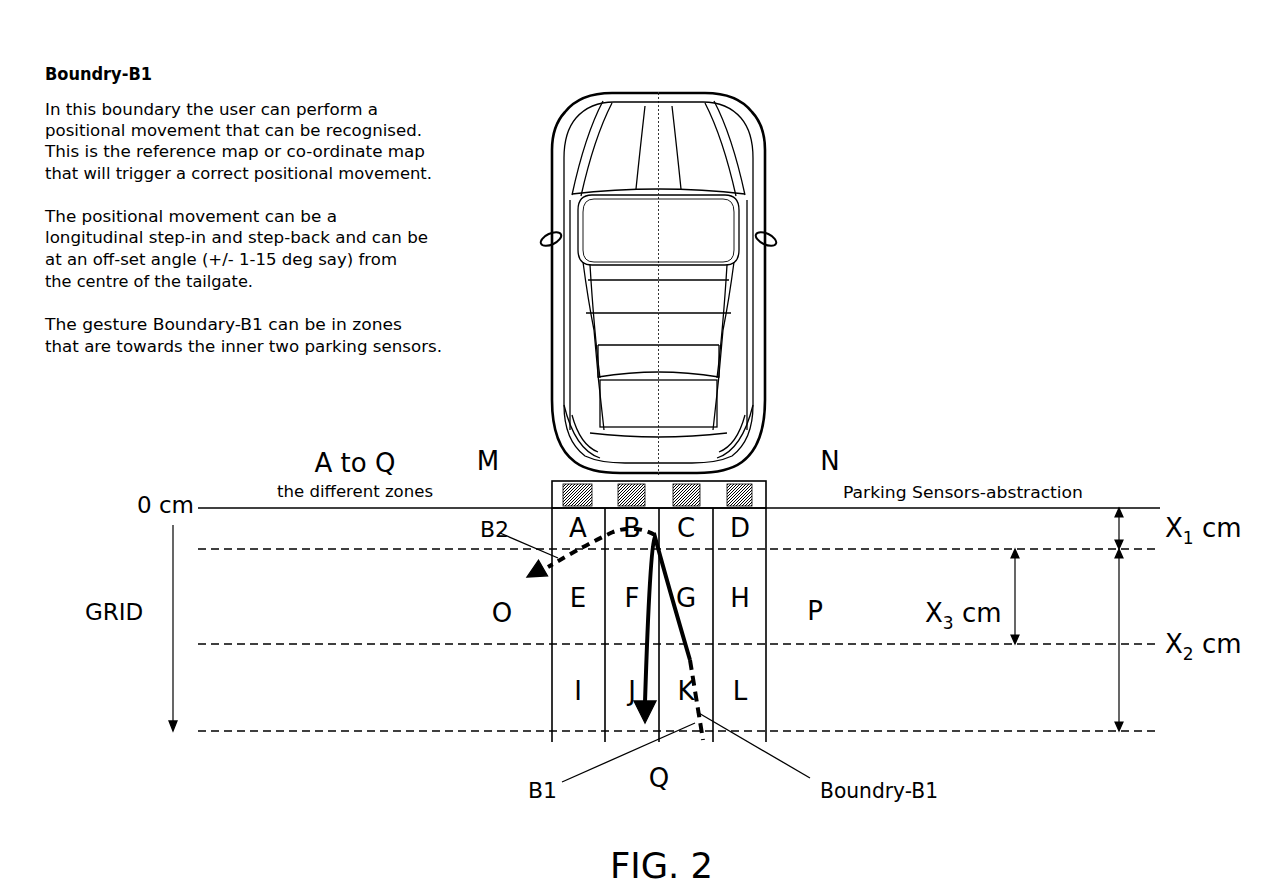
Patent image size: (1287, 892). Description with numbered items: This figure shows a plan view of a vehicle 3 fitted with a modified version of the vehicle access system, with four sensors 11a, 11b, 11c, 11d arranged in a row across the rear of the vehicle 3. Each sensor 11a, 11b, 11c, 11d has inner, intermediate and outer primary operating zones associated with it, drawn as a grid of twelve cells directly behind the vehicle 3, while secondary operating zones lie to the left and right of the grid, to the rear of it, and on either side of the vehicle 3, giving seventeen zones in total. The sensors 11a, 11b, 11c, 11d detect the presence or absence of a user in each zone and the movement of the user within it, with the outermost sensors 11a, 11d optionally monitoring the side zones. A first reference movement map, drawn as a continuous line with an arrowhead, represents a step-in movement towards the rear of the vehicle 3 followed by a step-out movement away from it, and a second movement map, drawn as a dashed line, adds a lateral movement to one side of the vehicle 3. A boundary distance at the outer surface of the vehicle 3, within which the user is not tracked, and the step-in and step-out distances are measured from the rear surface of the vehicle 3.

The vehicle 3 is at (710, 175).
The sensor 11a is at (572, 488).
The sensor 11b is at (622, 488).
The sensor 11c is at (690, 488).
The sensor 11d is at (745, 488).